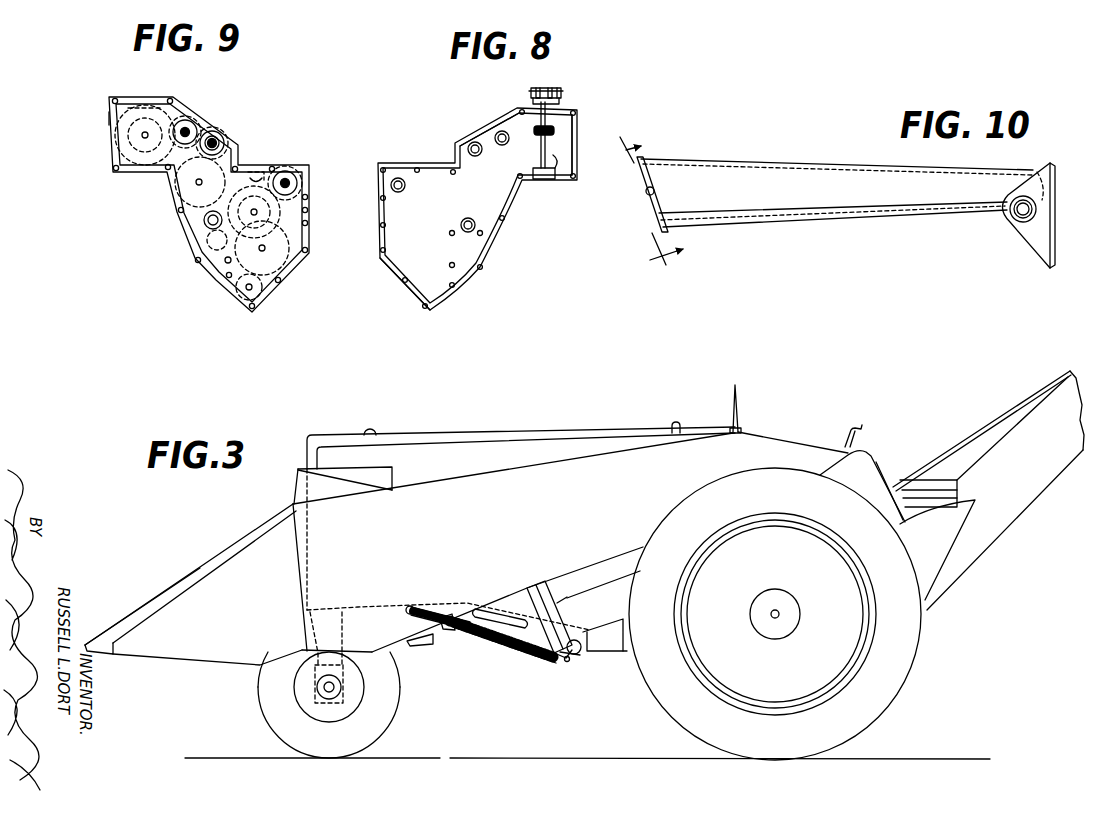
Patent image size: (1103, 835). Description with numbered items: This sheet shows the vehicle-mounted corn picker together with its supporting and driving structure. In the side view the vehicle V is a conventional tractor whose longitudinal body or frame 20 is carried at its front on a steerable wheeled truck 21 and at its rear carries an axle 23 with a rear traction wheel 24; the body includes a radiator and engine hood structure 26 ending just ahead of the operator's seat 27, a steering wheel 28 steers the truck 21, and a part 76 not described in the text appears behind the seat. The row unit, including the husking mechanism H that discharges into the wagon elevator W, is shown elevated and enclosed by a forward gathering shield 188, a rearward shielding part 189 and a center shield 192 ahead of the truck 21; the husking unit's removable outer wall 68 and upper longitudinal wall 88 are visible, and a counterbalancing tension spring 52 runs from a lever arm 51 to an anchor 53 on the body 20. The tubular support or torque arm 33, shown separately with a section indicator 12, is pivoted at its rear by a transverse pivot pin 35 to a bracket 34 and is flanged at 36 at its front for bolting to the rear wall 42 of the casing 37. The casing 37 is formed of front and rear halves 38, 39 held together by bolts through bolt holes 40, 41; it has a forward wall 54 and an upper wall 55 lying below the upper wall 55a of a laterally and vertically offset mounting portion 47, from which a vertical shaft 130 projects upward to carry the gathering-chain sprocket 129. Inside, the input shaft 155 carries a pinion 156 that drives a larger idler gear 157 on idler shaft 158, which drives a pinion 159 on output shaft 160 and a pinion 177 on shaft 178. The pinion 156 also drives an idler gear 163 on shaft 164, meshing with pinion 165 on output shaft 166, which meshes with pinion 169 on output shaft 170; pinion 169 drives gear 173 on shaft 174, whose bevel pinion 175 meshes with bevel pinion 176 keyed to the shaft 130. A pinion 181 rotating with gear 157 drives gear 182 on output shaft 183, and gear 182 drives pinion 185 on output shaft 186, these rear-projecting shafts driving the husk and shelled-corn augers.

In FIG. 10, the section line 12 is at (640, 207).
In FIG. 3, the body or frame 20 is at (310, 599).
In FIG. 3, the steerable wheeled truck 21 is at (374, 734).
In FIG. 3, the axle 23 is at (778, 612).
In FIG. 3, the rear traction wheel 24 is at (892, 707).
In FIG. 3, the radiator and engine hood structure 26 is at (334, 436).
In FIG. 3, the operator's seat 27 is at (866, 428).
In FIG. 3, the steering wheel 28 is at (733, 382).
In FIG. 10, the support or torque arm 33 is at (862, 177).
In FIG. 10, the bracket 34 is at (1056, 228).
In FIG. 10, the transverse pivot pin 35 is at (1021, 223).
In FIG. 10, the flange 36 is at (645, 157).
In FIG. 9, the casing or housing 37 is at (222, 290).
In FIG. 8, the casing or housing 37 is at (481, 282).
In FIG. 3, the casing or housing 37 is at (553, 660).
In FIG. 8, the front half of the casing 38 is at (492, 121).
In FIG. 9, the rear half of the casing 39 is at (192, 124).
In FIG. 8, the bolt holes 40 is at (506, 219).
In FIG. 9, the bolt holes 41 is at (116, 99).
In FIG. 9, the rear wall 42 is at (133, 108).
In FIG. 9, the offset mounting portion 47 is at (108, 118).
In FIG. 8, the offset mounting portion 47 is at (578, 117).
In FIG. 3, the lever arm 51 is at (574, 652).
In FIG. 3, the tension spring 52 is at (497, 647).
In FIG. 3, the anchor 53 is at (410, 606).
In FIG. 8, the forward wall 54 is at (434, 292).
In FIG. 3, the forward wall 54 is at (533, 639).
In FIG. 9, the upper transverse wall 55 is at (310, 167).
In FIG. 8, the upper transverse wall 55 is at (407, 162).
In FIG. 8, the upper wall 55a is at (571, 107).
In FIG. 3, the outer wall of the husking unit 68 is at (621, 621).
In FIG. 3, the fender 76 is at (887, 477).
In FIG. 3, the longitudinally extending wall 88 is at (608, 570).
In FIG. 8, the sprocket 129 is at (563, 86).
In FIG. 8, the shaft 130 is at (557, 179).
In FIG. 9, the input shaft 155 is at (214, 230).
In FIG. 9, the pinion 156 is at (206, 226).
In FIG. 9, the gear 157 is at (306, 238).
In FIG. 9, the idler shaft 158 is at (257, 212).
In FIG. 9, the pinion 159 is at (305, 183).
In FIG. 9, the output shaft 160 is at (288, 175).
In FIG. 9, the gear 163 is at (178, 188).
In FIG. 9, the shaft 164 is at (197, 184).
In FIG. 9, the pinion 165 is at (216, 142).
In FIG. 9, the shaft 166 is at (216, 140).
In FIG. 9, the pinion 169 is at (185, 120).
In FIG. 9, the output shaft 170 is at (212, 131).
In FIG. 9, the gear 173 is at (143, 146).
In FIG. 9, the shaft 174 is at (143, 136).
In FIG. 9, the bevel pinion 175 is at (168, 168).
In FIG. 8, the bevel pinion 176 is at (555, 130).
In FIG. 9, the pinion 177 is at (256, 190).
In FIG. 9, the shaft 178 is at (259, 175).
In FIG. 9, the pinion 181 is at (254, 212).
In FIG. 9, the gear 182 is at (307, 258).
In FIG. 9, the output shaft 183 is at (265, 250).
In FIG. 9, the pinion 185 is at (253, 287).
In FIG. 9, the output shaft 186 is at (249, 291).
In FIG. 3, the forward shielding part 188 is at (262, 614).
In FIG. 3, the rearward shielding part 189 is at (564, 519).
In FIG. 3, the center shield 192 is at (216, 562).
In FIG. 3, the vehicle V is at (307, 442).
In FIG. 3, the husking mechanism H is at (607, 638).
In FIG. 3, the wagon elevator W is at (1020, 515).